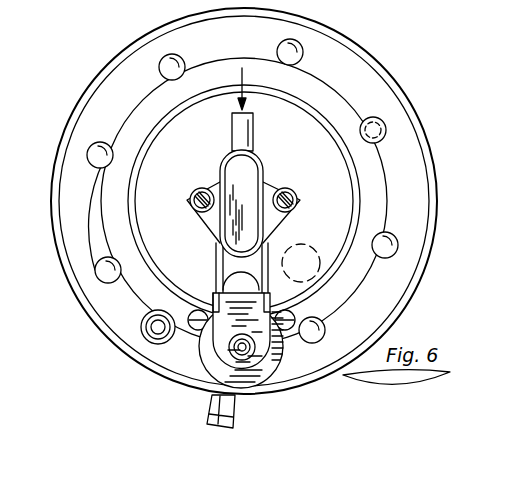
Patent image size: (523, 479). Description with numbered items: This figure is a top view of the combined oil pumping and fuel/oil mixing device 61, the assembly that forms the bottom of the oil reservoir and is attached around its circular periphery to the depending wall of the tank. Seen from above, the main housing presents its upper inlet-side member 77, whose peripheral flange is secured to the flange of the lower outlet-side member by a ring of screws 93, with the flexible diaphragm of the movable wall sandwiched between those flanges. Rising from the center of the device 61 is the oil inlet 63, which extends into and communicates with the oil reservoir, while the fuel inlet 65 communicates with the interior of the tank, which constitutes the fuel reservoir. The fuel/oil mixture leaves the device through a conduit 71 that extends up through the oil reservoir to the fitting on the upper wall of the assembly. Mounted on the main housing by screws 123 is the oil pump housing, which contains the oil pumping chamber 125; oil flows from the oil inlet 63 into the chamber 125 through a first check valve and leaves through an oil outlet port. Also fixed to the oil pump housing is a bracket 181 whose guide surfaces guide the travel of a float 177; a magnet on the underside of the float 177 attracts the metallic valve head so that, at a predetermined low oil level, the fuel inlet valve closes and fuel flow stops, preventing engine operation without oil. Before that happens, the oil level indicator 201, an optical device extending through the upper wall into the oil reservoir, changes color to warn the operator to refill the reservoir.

The combined oil pumping and fuel/oil mixing device 61 is at (84, 323).
The oil inlet 63 is at (253, 124).
The fuel inlet 65 is at (236, 410).
The conduit 71 is at (145, 338).
The upper inlet-side member 77 is at (357, 188).
The screws 93 is at (388, 118).
The screws 123 is at (293, 188).
The oil pumping chamber 125 is at (242, 174).
The float 177 is at (216, 356).
The bracket 181 is at (260, 322).
The oil level indicator 201 is at (309, 252).